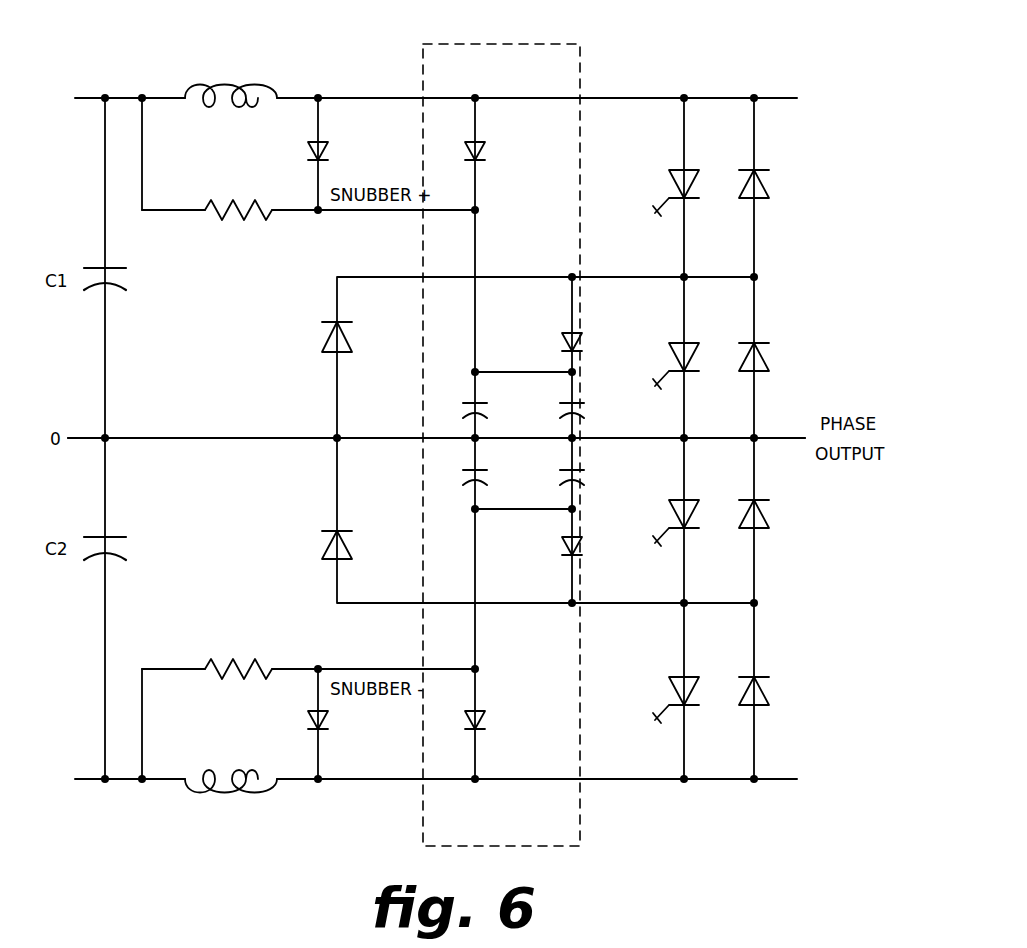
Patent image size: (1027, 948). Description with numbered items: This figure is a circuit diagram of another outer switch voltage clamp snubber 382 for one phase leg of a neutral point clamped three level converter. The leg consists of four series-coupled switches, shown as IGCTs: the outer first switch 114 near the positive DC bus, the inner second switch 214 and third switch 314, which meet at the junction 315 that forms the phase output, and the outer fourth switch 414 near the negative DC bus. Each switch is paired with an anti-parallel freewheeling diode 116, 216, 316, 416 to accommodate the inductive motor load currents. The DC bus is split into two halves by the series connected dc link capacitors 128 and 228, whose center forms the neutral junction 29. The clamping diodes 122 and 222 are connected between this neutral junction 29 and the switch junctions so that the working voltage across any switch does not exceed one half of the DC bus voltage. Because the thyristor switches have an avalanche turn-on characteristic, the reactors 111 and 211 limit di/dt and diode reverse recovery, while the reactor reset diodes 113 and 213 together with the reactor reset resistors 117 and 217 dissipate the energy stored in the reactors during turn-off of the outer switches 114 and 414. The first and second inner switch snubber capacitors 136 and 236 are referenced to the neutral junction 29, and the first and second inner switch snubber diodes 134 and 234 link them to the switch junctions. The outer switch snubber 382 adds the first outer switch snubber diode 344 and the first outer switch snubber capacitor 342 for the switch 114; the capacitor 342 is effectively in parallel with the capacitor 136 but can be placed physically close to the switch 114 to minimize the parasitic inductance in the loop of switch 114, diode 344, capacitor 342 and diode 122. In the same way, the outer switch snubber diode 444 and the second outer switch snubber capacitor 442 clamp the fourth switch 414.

The reactor 111 is at (246, 86).
The reactor reset resistor 117 is at (212, 212).
The reactor reset diode 113 is at (306, 152).
The dc link capacitor 128 is at (140, 252).
The first outer switch snubber diode 344 is at (470, 153).
The first switch 114 is at (670, 178).
The freewheeling diode 116 is at (762, 170).
The outer switch voltage clamp snubber 382 is at (422, 239).
The clamping diode 122 is at (330, 338).
The neutral junction 29 is at (108, 436).
The first outer switch snubber capacitor 342 is at (478, 404).
The first inner switch snubber diode 134 is at (582, 343).
The first inner switch snubber capacitor 136 is at (586, 415).
The second outer switch snubber capacitor 442 is at (478, 471).
The second inner switch snubber capacitor 236 is at (584, 470).
The second switch 214 is at (674, 352).
The freewheeling diode 216 is at (762, 343).
The junction 315 is at (686, 436).
The third switch 314 is at (674, 518).
The freewheeling diode 316 is at (762, 502).
The dc link capacitor 228 is at (140, 522).
The clamping diode 222 is at (330, 542).
The second inner switch snubber diode 234 is at (580, 548).
The reactor reset resistor 217 is at (230, 672).
The reactor reset diode 213 is at (306, 716).
The reactor 211 is at (222, 798).
The outer switch snubber diode 444 is at (472, 727).
The fourth switch 414 is at (680, 688).
The freewheeling diode 416 is at (760, 706).